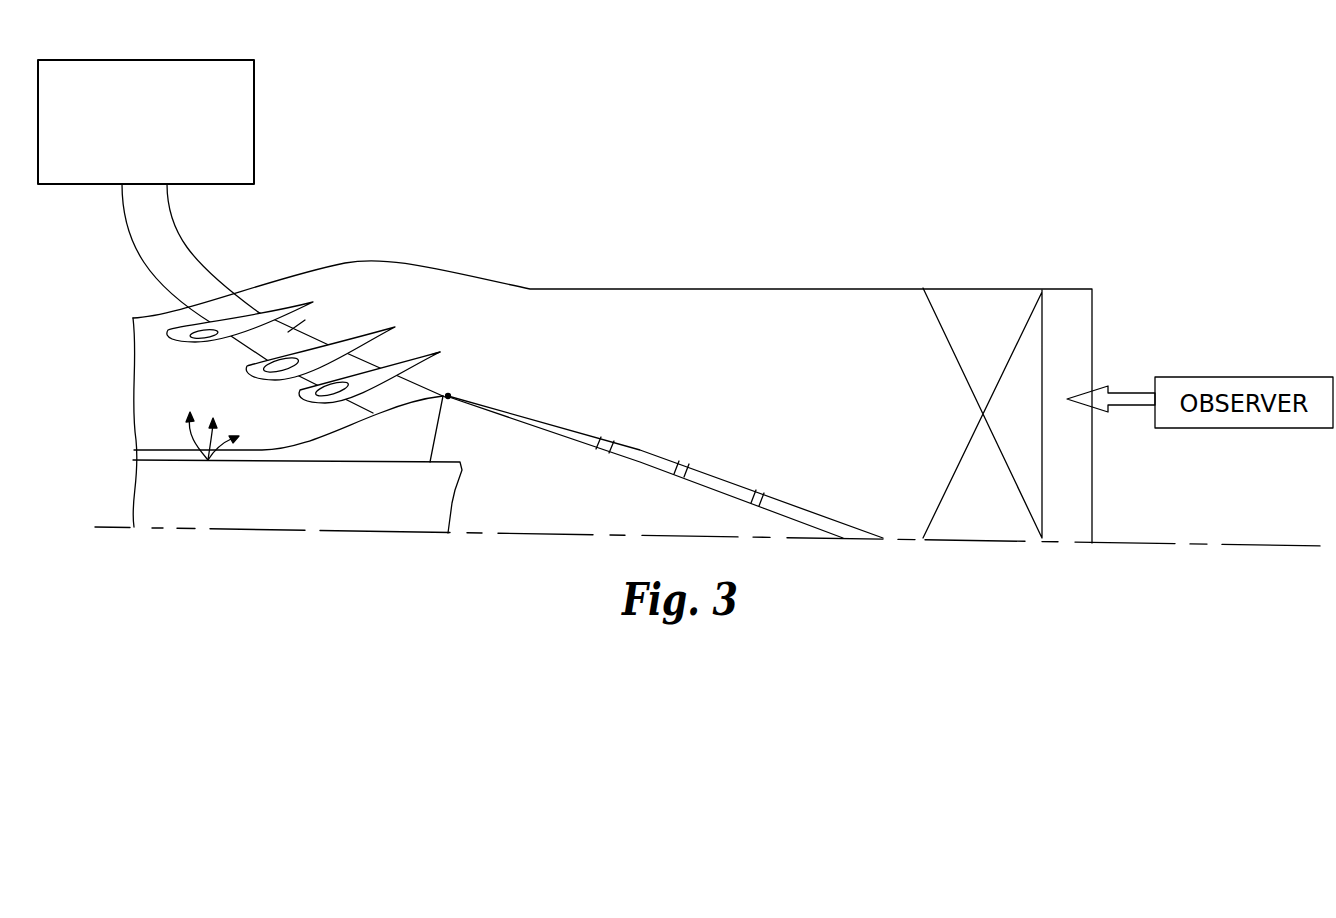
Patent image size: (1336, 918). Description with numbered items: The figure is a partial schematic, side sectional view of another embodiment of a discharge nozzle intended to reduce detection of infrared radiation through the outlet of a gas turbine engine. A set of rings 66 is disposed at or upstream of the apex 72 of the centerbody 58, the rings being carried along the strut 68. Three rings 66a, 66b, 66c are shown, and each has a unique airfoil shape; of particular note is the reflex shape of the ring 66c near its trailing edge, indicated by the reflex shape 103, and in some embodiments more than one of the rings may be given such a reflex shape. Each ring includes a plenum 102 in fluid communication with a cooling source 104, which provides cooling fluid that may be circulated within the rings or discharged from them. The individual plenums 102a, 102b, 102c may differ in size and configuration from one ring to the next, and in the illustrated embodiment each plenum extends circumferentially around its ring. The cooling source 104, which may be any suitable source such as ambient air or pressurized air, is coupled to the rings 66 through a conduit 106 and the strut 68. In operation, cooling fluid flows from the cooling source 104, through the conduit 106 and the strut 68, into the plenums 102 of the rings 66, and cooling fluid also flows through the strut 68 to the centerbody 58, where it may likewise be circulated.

The centerbody 58 is at (392, 435).
The rings 66 is at (170, 405).
The first ring 66a is at (257, 313).
The second ring 66b is at (366, 334).
The third ring 66c is at (433, 356).
The strut 68 is at (358, 318).
The apex 72 is at (450, 396).
The plenum 102 is at (208, 460).
The first plenum 102a is at (200, 342).
The second plenum 102b is at (263, 374).
The third plenum 102c is at (316, 398).
The reflex shape 103 is at (448, 353).
The cooling source 104 is at (255, 87).
The conduit 106 is at (193, 253).